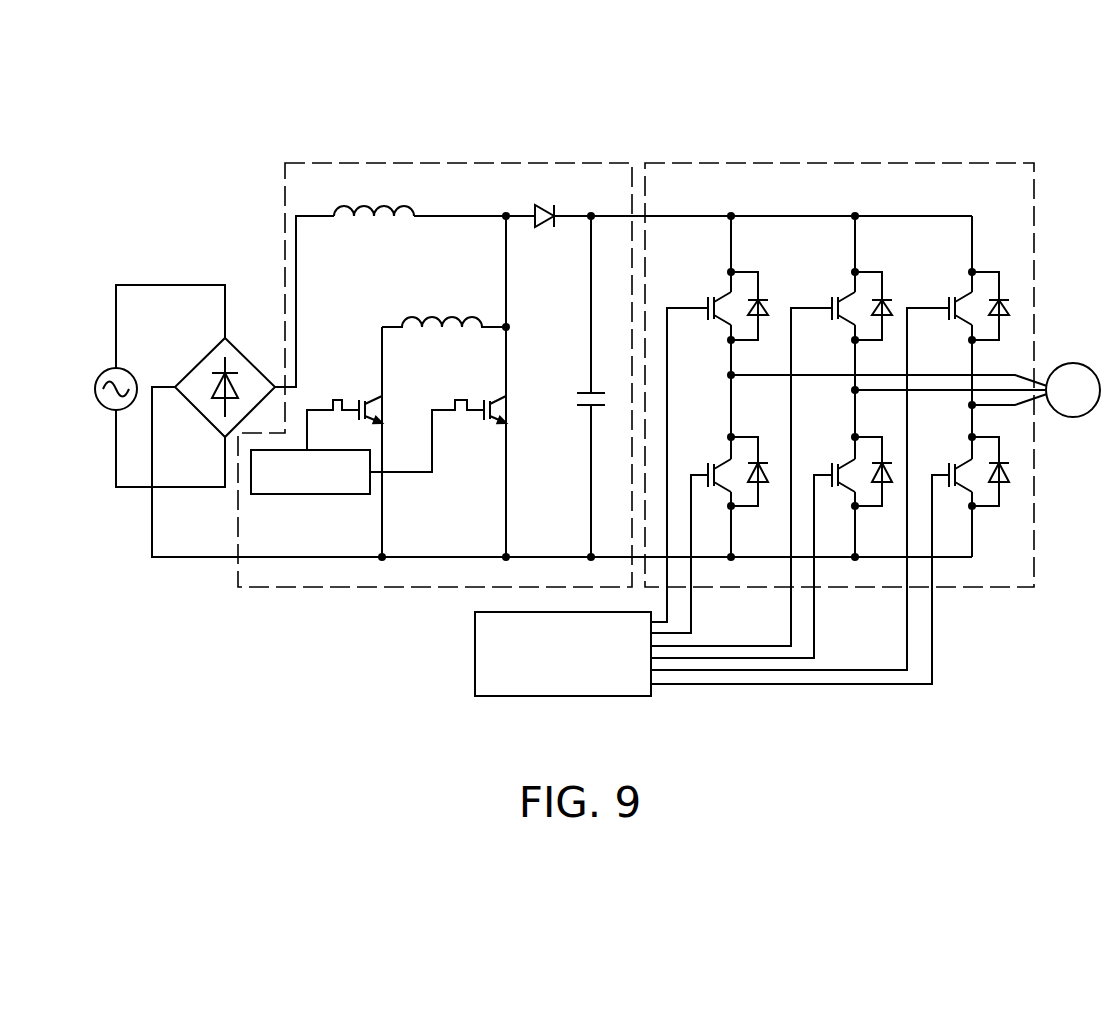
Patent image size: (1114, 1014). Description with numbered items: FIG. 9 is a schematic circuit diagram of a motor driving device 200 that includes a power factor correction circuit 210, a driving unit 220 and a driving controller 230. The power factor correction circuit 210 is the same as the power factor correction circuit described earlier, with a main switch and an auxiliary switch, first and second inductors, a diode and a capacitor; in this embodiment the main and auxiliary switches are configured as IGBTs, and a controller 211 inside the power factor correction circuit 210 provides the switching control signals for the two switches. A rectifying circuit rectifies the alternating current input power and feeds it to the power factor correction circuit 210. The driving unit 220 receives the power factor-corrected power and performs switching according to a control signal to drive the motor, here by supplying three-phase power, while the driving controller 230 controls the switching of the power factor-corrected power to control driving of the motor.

The motor driving device 200 is at (356, 55).
The power factor correction circuit 210 is at (455, 163).
The controller 211 is at (305, 494).
The driving unit 220 is at (836, 163).
The driving controller 230 is at (559, 696).